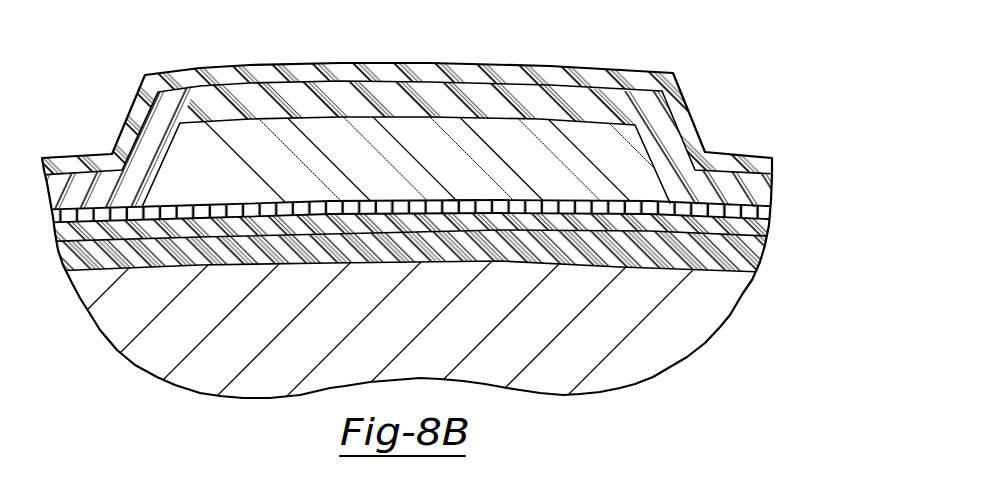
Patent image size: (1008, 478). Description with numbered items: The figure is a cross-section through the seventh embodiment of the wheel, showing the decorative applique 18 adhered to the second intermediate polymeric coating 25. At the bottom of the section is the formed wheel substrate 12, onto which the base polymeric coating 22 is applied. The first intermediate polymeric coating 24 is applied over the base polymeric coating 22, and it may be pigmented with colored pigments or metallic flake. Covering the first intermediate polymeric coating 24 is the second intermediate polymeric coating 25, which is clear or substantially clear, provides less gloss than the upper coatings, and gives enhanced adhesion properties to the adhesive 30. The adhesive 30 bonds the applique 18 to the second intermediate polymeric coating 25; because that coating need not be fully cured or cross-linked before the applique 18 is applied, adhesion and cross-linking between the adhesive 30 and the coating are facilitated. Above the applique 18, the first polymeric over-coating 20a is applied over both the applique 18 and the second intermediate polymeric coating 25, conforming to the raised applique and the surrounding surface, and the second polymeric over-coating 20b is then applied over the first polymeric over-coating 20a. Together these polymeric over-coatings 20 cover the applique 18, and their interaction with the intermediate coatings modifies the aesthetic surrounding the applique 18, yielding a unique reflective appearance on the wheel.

The polymeric over-coatings 20 is at (750, 132).
The second polymeric over-coating 20b is at (763, 165).
The first polymeric over-coating 20a is at (763, 198).
The decorative applique 18 is at (364, 167).
The adhesive 30 is at (463, 197).
The second intermediate polymeric coating 25 is at (763, 217).
The first intermediate polymeric coating 24 is at (763, 232).
The base polymeric coating 22 is at (753, 252).
The wheel substrate 12 is at (401, 336).